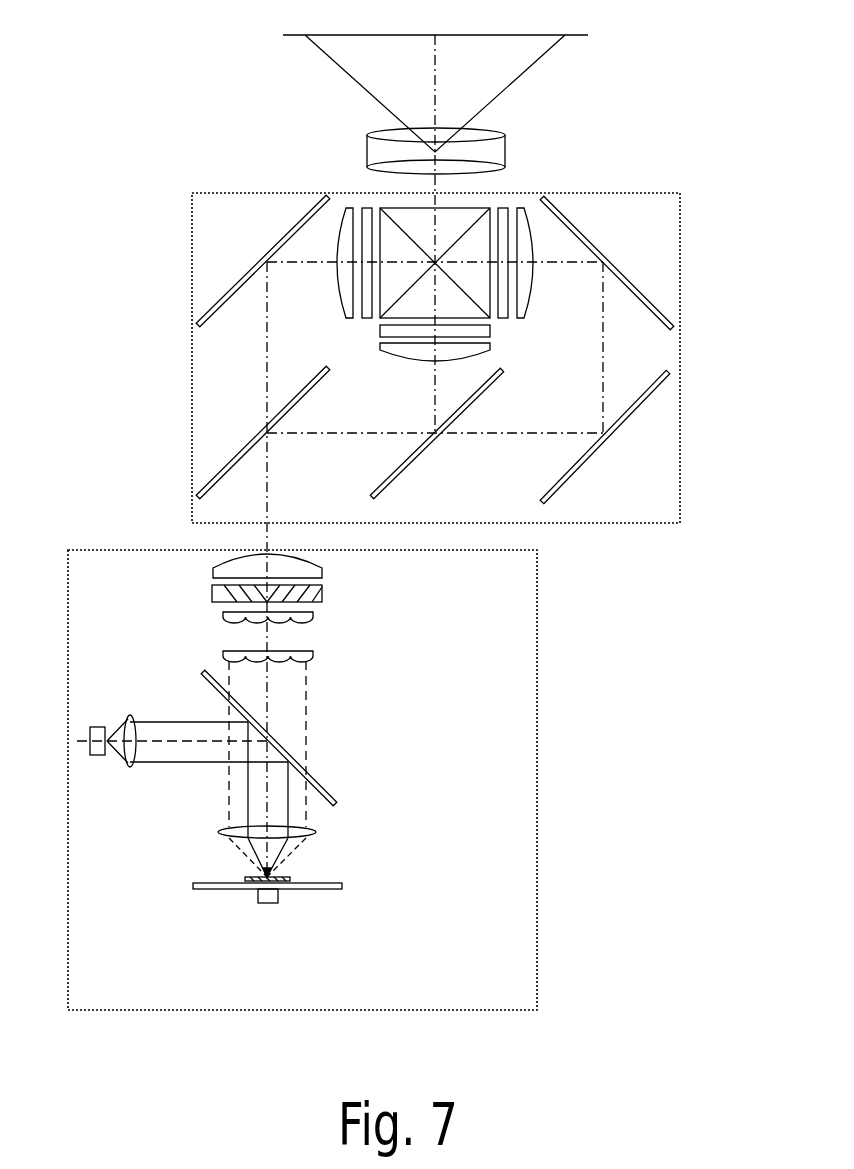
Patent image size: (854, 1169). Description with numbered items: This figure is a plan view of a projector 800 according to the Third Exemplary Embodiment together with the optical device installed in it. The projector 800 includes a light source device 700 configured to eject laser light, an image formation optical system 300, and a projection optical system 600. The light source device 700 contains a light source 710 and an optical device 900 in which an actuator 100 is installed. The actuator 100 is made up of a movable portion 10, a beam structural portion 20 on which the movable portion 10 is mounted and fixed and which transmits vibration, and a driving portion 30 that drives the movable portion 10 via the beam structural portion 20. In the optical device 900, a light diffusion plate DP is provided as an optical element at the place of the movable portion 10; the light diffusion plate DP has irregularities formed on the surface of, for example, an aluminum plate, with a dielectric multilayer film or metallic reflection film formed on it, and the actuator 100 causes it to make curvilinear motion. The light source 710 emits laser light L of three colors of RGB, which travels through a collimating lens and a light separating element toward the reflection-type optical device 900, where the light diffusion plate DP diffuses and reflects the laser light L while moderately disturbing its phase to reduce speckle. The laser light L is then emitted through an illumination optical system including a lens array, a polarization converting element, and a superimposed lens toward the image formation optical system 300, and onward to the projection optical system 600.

The projector 800 is at (725, 27).
The projection optical system 600 is at (372, 146).
The image formation optical system 300 is at (213, 192).
The light source device 700 is at (302, 753).
The light source 710 is at (97, 726).
The laser light L is at (150, 765).
The optical device 900 is at (374, 814).
The light diffusion plate DP is at (320, 854).
The movable portion 10 is at (291, 876).
The beam structural portion 20 is at (316, 890).
The driving portion 30 is at (268, 904).
The actuator 100 is at (294, 904).